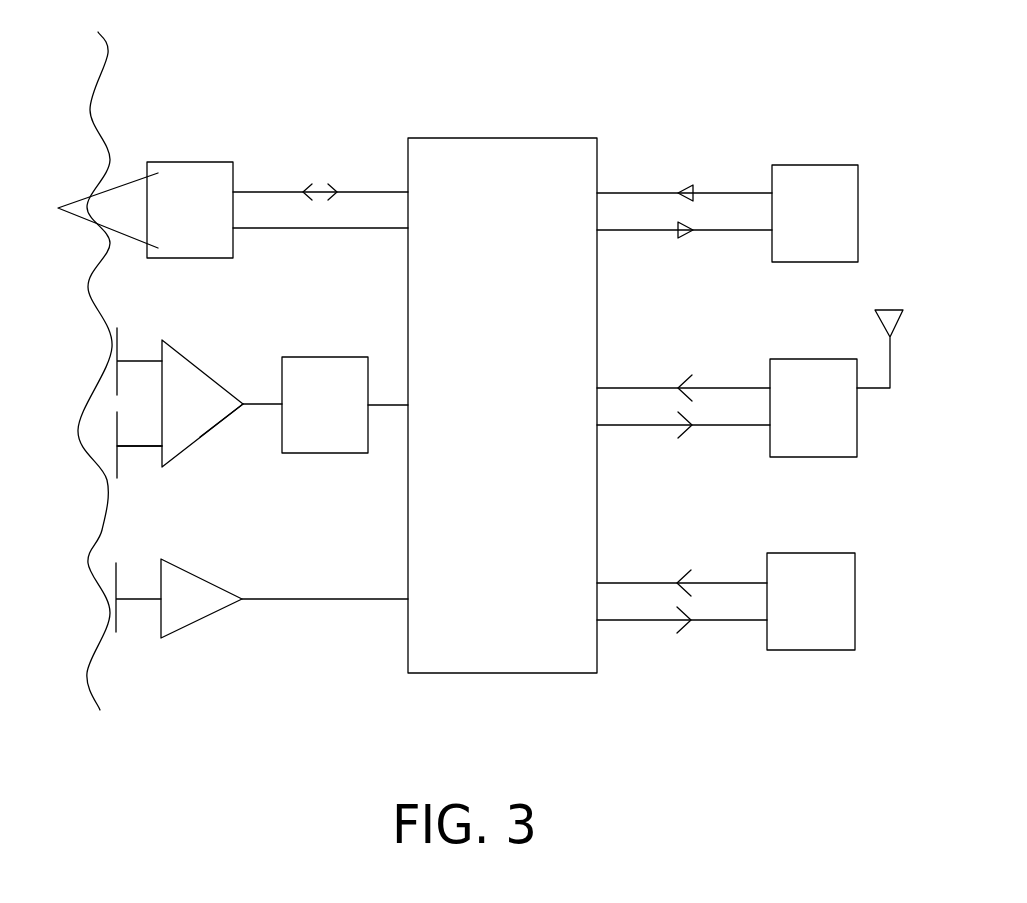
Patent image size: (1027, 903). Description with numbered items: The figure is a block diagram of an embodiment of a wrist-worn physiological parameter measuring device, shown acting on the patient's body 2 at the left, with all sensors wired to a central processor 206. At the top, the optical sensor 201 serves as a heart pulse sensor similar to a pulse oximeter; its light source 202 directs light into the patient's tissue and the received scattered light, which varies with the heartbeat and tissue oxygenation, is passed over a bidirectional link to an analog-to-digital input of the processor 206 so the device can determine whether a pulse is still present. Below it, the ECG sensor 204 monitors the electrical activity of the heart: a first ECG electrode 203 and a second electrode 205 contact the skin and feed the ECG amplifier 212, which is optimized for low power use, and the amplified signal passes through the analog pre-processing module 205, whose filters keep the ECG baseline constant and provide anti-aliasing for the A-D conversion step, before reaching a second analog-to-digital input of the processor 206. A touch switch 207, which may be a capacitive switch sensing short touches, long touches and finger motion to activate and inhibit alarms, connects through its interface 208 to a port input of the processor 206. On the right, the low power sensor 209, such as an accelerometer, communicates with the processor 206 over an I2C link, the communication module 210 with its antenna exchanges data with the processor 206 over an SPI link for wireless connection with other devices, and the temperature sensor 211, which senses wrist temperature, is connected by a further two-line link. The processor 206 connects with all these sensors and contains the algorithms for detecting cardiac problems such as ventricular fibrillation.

The body surface 2 is at (105, 45).
The optical sensor 201 is at (218, 172).
The light source 202 is at (127, 175).
The first ECG electrode 203 is at (138, 360).
The ECG sensor 204 is at (187, 372).
The analog pre-processing module 205 is at (328, 368).
The processor 206 is at (505, 147).
The touch switch 207 is at (137, 600).
The interface 208 is at (195, 590).
The low power sensor 209 is at (817, 173).
The communication module 210 is at (817, 367).
The temperature sensor 211 is at (814, 562).
The ECG amplifier 212 is at (203, 435).